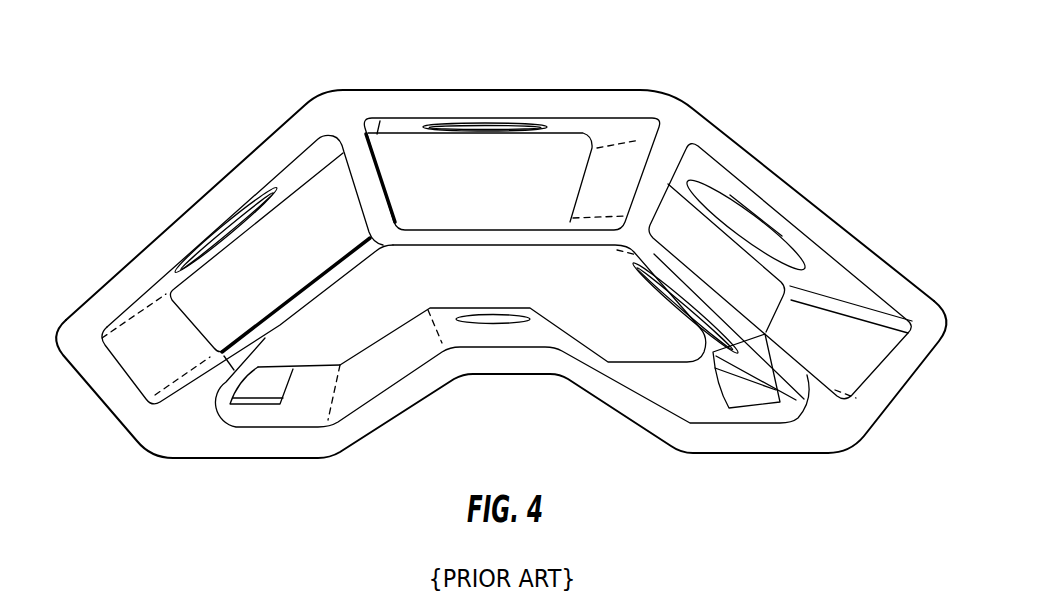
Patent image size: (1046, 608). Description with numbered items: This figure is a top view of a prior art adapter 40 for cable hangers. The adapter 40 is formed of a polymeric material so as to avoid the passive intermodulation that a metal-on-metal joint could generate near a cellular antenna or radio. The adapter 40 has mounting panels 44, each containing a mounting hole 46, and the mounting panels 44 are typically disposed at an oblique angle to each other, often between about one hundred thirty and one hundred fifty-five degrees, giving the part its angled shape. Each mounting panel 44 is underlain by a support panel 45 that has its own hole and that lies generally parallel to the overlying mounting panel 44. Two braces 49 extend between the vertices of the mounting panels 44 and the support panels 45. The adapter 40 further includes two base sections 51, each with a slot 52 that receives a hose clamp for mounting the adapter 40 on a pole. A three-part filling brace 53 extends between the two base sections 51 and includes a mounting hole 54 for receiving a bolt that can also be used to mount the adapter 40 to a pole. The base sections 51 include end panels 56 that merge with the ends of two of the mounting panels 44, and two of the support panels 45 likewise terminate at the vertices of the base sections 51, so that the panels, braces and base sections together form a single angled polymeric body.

The adapter 40 is at (880, 193).
The mounting panel 44 is at (150, 263).
The support panel 45 is at (275, 327).
The mounting hole 46 is at (188, 188).
The brace 49 is at (367, 185).
The base section 51 is at (305, 442).
The slot 52 is at (257, 406).
The filling brace 53 is at (493, 360).
The mounting hole 54 is at (493, 318).
The end panel 56 is at (122, 400).